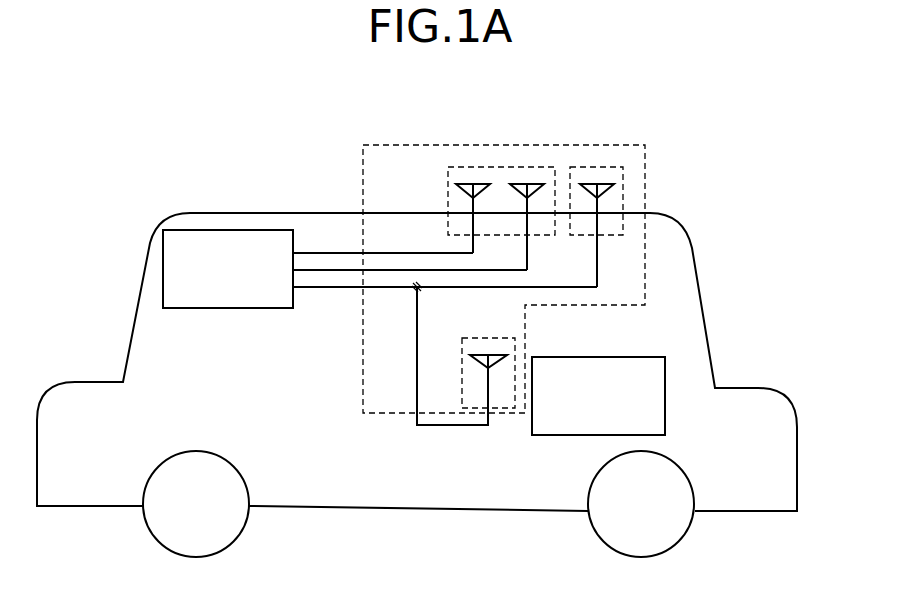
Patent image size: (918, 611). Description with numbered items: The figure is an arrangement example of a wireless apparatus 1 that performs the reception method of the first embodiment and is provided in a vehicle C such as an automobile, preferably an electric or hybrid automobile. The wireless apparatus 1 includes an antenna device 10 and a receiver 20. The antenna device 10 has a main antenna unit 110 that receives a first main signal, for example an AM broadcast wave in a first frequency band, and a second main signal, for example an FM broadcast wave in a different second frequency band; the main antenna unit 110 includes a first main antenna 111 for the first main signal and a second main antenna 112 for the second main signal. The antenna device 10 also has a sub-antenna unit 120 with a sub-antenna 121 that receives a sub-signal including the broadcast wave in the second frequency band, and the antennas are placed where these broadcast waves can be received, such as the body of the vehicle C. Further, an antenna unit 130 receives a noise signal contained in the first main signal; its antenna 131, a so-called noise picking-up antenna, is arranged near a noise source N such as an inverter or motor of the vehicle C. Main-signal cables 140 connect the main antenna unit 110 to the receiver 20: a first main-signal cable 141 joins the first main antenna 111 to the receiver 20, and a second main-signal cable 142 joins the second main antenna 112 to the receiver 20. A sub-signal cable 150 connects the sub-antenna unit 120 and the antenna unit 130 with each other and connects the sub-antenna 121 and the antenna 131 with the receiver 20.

The wireless apparatus 1 is at (151, 127).
The antenna device 10 is at (538, 145).
The receiver 20 is at (231, 310).
The main antenna unit 110 is at (466, 167).
The first main antenna 111 is at (470, 222).
The second main antenna 112 is at (529, 227).
The sub-antenna unit 120 is at (595, 167).
The sub-antenna 121 is at (599, 227).
The antenna unit 130 is at (473, 430).
The antenna 131 is at (480, 388).
The main-signal cables 140 is at (365, 128).
The first main-signal cable 141 is at (385, 253).
The second main-signal cable 142 is at (377, 268).
The sub-signal cable 150 is at (395, 292).
The noise source N is at (632, 357).
The vehicle C is at (797, 466).